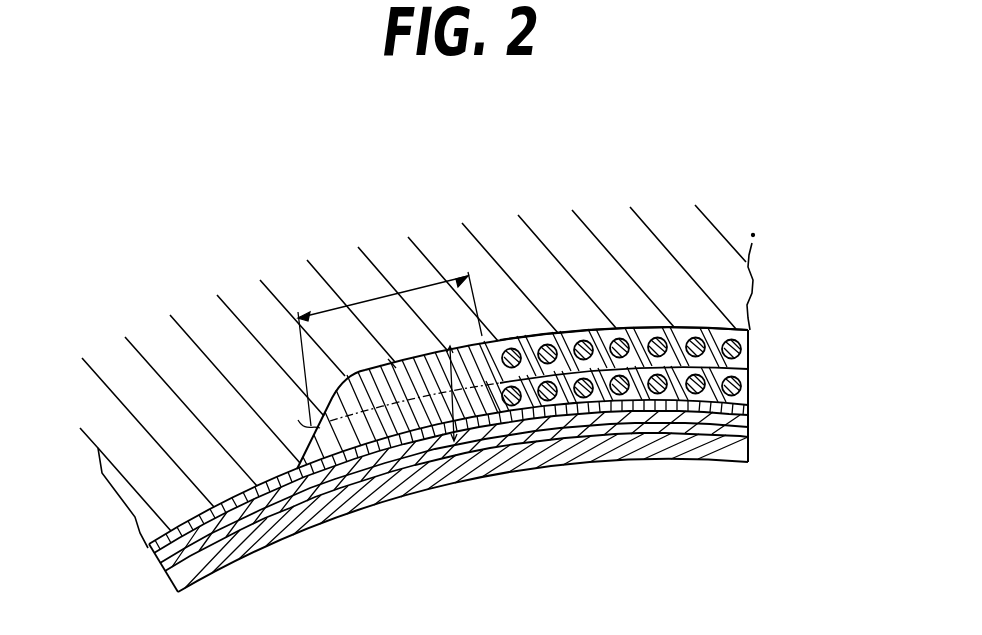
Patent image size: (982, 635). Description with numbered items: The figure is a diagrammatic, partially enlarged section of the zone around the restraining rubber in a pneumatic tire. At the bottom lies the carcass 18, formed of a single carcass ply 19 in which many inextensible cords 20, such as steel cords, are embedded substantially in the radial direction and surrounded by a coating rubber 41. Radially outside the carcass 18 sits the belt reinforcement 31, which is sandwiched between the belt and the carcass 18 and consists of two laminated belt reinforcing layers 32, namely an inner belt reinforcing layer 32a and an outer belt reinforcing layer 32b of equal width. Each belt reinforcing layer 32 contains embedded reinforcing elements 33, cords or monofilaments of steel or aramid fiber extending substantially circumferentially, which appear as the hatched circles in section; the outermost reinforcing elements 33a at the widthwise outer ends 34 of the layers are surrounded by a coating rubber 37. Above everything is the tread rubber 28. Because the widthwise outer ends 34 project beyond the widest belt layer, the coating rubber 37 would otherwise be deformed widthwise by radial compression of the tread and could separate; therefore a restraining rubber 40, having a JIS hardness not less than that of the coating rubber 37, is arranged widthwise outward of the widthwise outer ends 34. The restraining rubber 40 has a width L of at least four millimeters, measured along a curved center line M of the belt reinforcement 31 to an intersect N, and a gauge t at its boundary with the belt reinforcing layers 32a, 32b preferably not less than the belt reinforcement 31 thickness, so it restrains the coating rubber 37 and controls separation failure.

The carcass 18 is at (213, 572).
The carcass ply 19 is at (268, 533).
The inextensible cords 20 is at (330, 503).
The tread rubber 28 is at (617, 232).
The belt reinforcement 31 is at (643, 330).
The belt reinforcing layer 32 is at (756, 374).
The inner belt reinforcing layer 32a is at (750, 413).
The outer belt reinforcing layer 32b is at (566, 332).
The reinforcing elements 33 is at (714, 330).
The outermost reinforcing elements 33a is at (509, 340).
The widthwise outer ends 34 is at (390, 368).
The coating rubber 37 is at (495, 412).
The restraining rubber 40 is at (400, 485).
The coating rubber 41 is at (146, 548).